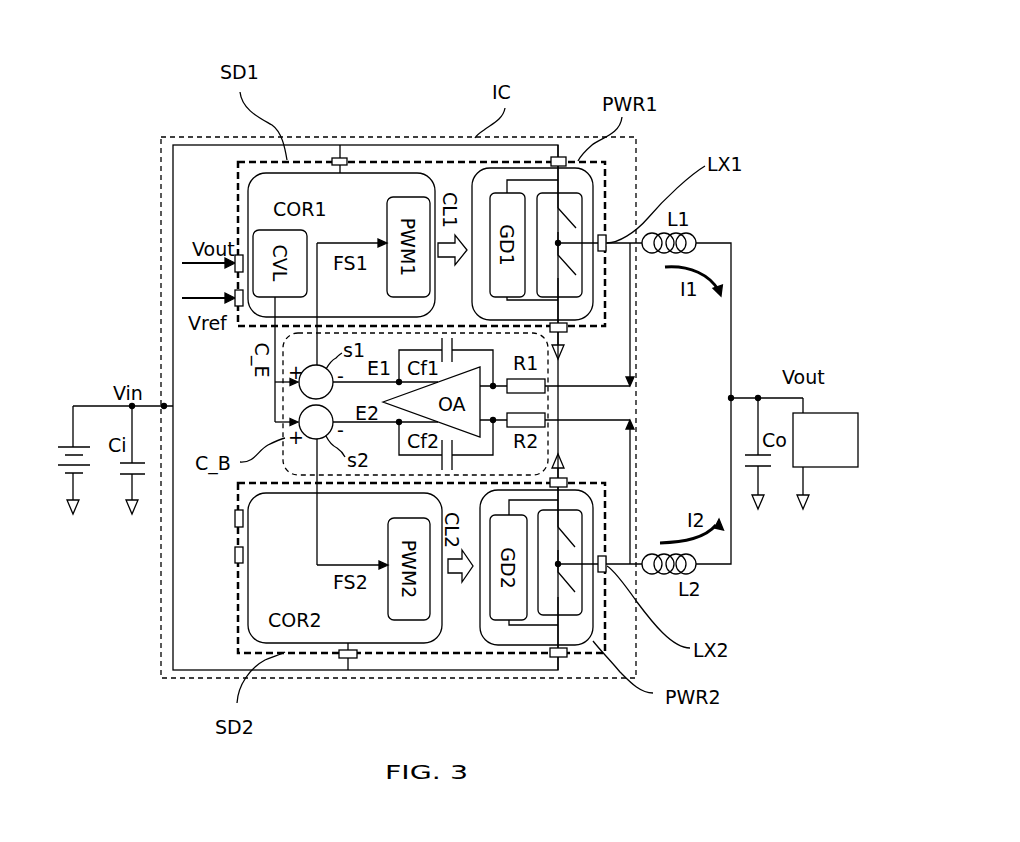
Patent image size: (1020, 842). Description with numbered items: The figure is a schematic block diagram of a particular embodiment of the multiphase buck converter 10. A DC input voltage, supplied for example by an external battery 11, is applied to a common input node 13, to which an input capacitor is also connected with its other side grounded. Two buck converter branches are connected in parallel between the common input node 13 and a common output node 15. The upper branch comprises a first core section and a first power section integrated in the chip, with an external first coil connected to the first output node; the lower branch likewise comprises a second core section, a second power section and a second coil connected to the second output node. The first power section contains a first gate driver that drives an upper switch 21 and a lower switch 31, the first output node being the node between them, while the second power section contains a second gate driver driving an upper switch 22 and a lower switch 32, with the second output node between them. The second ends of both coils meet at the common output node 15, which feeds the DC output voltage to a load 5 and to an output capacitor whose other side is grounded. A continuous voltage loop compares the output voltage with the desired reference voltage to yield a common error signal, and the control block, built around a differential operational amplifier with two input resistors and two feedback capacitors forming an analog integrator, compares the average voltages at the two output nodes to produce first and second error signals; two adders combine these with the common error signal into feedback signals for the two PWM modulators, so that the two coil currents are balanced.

The multiphase buck converter 10 is at (397, 111).
The external battery 11 is at (77, 394).
The common input node 13 is at (173, 406).
The common output node 15 is at (731, 398).
The upper switch 21 is at (569, 208).
The upper switch 22 is at (570, 533).
The lower switch 31 is at (570, 282).
The lower switch 32 is at (572, 603).
The load 5 is at (827, 470).